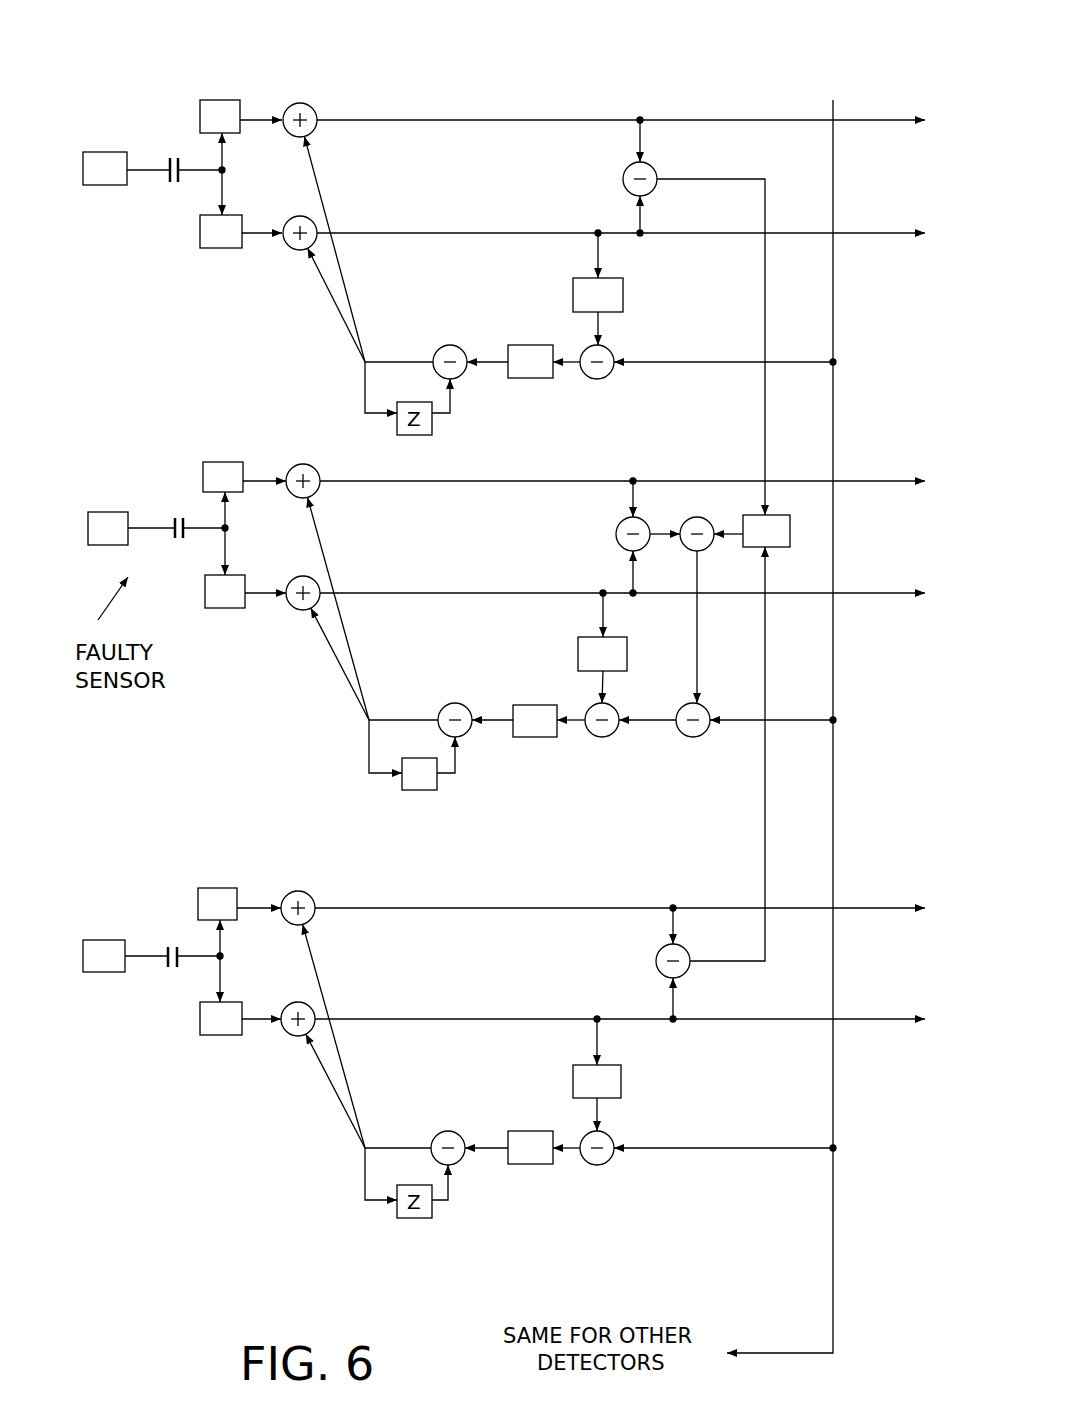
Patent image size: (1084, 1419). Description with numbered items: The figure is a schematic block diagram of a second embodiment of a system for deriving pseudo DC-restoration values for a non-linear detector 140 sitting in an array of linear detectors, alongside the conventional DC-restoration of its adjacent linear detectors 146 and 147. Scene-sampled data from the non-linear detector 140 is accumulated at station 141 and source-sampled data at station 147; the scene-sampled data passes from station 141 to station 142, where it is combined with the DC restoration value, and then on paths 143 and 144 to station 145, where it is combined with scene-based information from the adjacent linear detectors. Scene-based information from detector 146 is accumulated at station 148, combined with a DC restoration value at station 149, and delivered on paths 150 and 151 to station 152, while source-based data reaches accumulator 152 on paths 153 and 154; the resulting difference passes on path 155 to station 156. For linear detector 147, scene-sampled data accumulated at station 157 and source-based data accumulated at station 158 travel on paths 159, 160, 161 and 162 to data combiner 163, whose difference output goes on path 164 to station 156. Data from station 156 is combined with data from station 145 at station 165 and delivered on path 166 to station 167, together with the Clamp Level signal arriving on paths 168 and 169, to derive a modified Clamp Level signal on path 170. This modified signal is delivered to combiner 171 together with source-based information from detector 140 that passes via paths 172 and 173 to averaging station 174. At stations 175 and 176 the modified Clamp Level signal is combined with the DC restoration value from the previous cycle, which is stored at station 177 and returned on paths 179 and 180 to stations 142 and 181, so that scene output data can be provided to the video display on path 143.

The non-linear detector 140 is at (110, 510).
The station 141 is at (217, 460).
The station 142 is at (322, 465).
The path 143 is at (530, 480).
The path 144 is at (635, 492).
The station 145 is at (617, 535).
The linear detector 146 is at (105, 150).
The linear detector 147 is at (233, 608).
The station 148 is at (210, 100).
The station 149 is at (307, 102).
The path 150 is at (505, 120).
The path 151 is at (642, 137).
The station 152 is at (623, 179).
The path 153 is at (443, 232).
The path 154 is at (642, 218).
The path 155 is at (747, 178).
The station 156 is at (793, 532).
The station 157 is at (217, 888).
The station 158 is at (217, 1037).
The path 159 is at (513, 908).
The path 160 is at (505, 1018).
The path 161 is at (675, 922).
The path 162 is at (673, 1007).
The data combiner 163 is at (655, 968).
The path 164 is at (765, 810).
The station 165 is at (710, 550).
The path 166 is at (698, 613).
The station 167 is at (697, 737).
The path 168 is at (833, 650).
The path 169 is at (780, 720).
The path 170 is at (655, 720).
The combiner 171 is at (612, 735).
The path 172 is at (467, 592).
The path 173 is at (605, 608).
The averaging station 174 is at (578, 650).
The station 175 is at (533, 737).
The station 176 is at (448, 703).
The station 177 is at (423, 790).
The path 179 is at (353, 653).
The path 180 is at (327, 647).
The station 181 is at (303, 575).